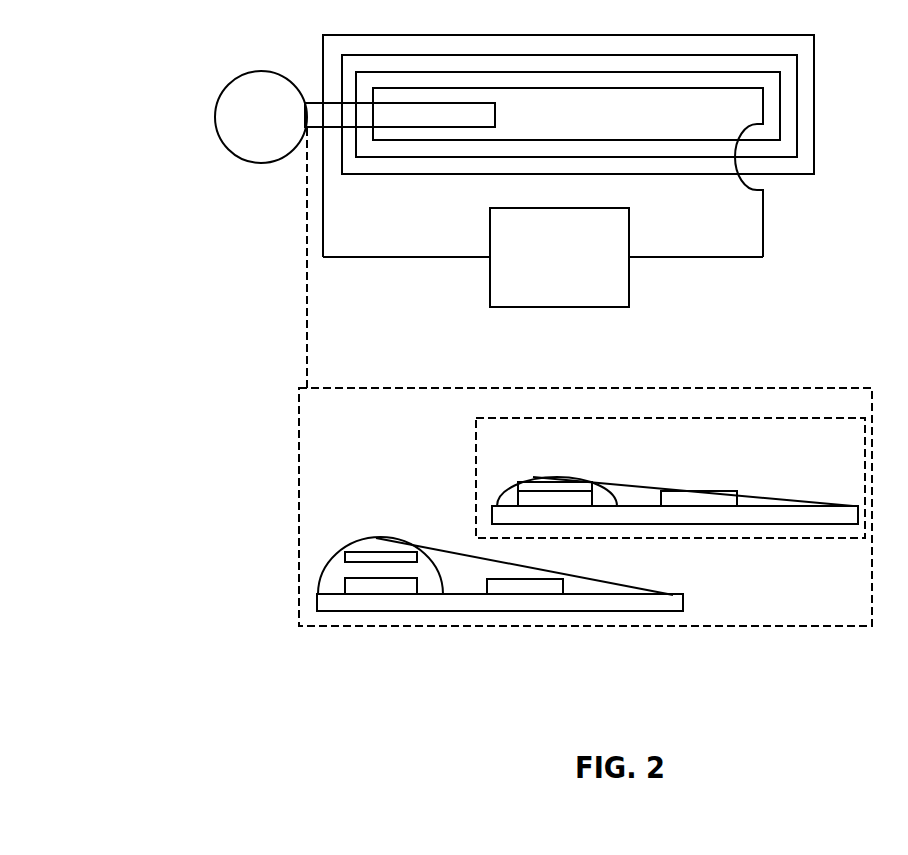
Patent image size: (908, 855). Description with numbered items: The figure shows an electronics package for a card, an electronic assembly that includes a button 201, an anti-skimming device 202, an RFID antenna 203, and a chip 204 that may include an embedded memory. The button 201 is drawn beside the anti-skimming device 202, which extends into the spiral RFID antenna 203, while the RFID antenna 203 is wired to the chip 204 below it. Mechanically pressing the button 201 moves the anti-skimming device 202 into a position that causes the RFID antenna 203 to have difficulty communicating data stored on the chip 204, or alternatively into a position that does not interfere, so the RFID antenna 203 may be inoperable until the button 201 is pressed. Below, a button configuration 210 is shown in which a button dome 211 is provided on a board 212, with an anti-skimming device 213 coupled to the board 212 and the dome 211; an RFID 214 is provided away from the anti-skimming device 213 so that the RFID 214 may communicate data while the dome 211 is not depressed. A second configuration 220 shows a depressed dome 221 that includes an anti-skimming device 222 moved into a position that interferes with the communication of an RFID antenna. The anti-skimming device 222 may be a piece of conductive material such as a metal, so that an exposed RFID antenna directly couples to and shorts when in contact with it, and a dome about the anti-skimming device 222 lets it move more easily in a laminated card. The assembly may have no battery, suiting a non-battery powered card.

The button 201 is at (231, 153).
The anti-skimming device 202 is at (495, 118).
The RFID antenna 203 is at (433, 175).
The chip 204 is at (490, 297).
The button configuration 210 is at (299, 431).
The button dome 211 is at (322, 578).
The board 212 is at (405, 607).
The anti-skimming device 213 is at (455, 552).
The RFID 214 is at (487, 581).
The configuration 220 is at (476, 433).
The depressed dome 221 is at (575, 456).
The anti-skimming device 222 is at (657, 483).